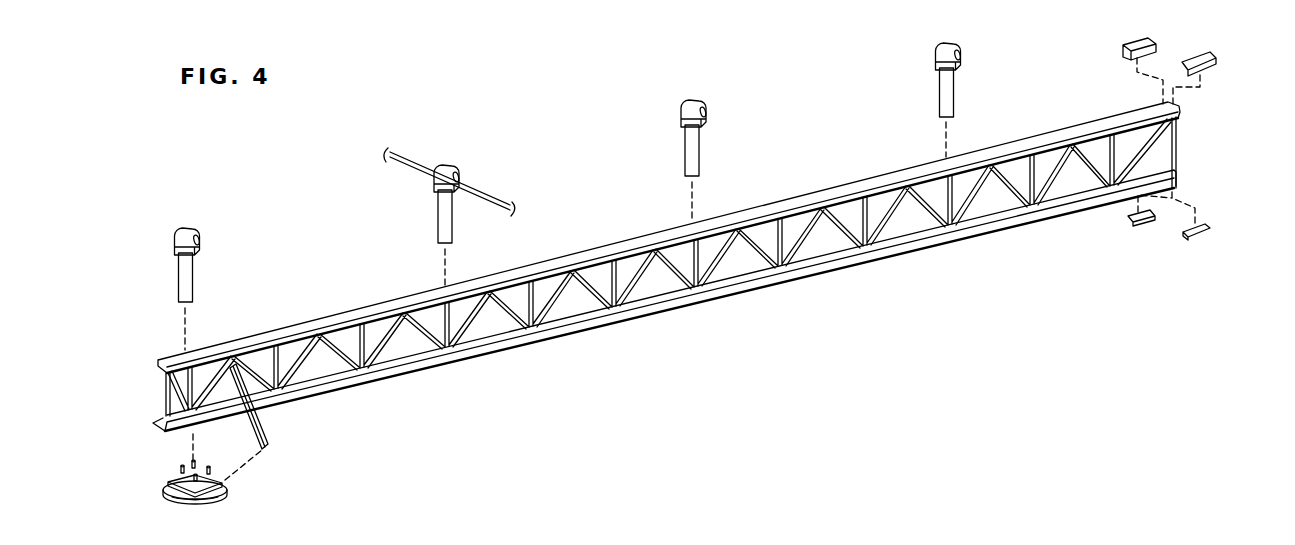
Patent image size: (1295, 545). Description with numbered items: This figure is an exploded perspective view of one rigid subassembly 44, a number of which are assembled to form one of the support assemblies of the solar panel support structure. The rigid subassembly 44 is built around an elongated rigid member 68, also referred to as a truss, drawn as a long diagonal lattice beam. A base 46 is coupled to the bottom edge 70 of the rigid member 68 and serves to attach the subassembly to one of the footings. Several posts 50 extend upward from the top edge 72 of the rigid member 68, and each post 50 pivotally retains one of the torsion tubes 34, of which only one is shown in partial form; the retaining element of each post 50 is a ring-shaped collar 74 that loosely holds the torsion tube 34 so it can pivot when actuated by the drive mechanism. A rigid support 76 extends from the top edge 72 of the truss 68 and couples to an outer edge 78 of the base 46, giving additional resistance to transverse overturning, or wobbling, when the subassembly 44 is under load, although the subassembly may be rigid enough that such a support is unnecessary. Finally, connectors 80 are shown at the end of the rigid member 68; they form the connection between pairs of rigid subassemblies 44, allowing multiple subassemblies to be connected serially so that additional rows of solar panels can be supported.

The torsion tube 34 is at (408, 154).
The rigid subassembly 44 is at (636, 266).
The base 46 is at (170, 482).
The post 50 is at (178, 285).
The elongated rigid member 68 is at (160, 412).
The bottom edge 70 is at (762, 287).
The top edge 72 is at (783, 198).
The ring-shaped collar 74 is at (187, 226).
The rigid support 76 is at (268, 432).
The outer edge 78 is at (195, 503).
The connector 80 is at (1130, 40).